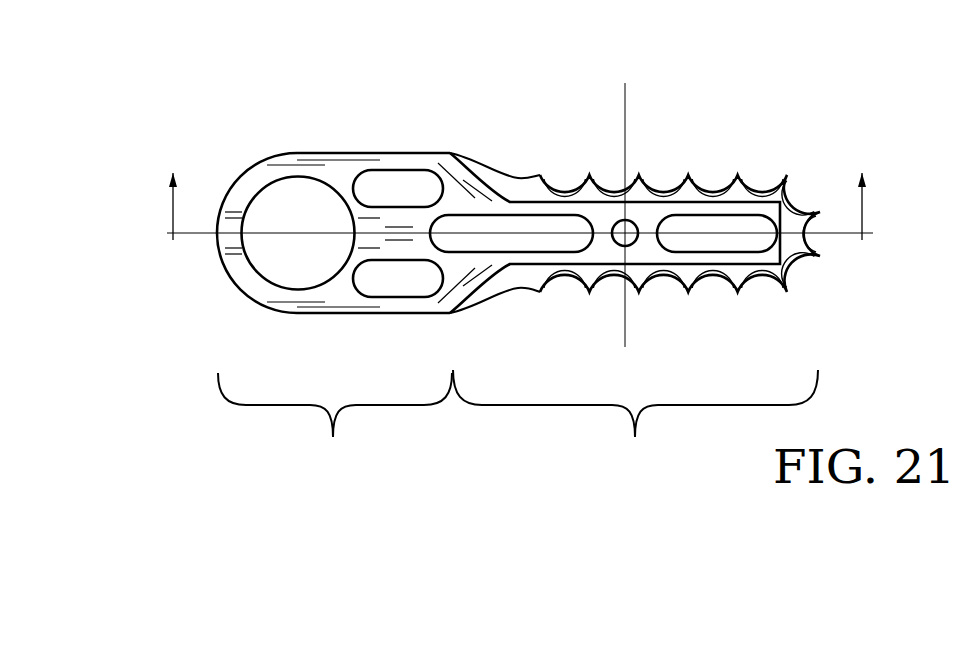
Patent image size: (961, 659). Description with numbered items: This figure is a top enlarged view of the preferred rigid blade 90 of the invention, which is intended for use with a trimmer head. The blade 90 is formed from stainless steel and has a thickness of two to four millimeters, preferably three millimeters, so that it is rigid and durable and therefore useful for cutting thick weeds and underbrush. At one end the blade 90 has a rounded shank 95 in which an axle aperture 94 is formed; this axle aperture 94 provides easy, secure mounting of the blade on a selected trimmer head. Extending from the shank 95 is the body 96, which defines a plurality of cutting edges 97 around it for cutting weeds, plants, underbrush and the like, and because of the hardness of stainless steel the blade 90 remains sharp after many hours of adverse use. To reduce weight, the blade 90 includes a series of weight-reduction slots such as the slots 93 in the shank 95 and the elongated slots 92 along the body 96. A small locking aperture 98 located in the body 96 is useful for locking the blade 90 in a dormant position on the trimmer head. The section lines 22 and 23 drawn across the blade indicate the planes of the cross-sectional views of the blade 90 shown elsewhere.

The blade 90 is at (245, 87).
The slots 92 is at (496, 214).
The slots 93 is at (395, 170).
The axle aperture 94 is at (288, 250).
The shank 95 is at (339, 284).
The body 96 is at (654, 301).
The cutting edges 97 is at (795, 268).
The locking aperture 98 is at (631, 222).
The section line 22- 22 is at (556, 91).
The section line 23- 23 is at (511, 188).